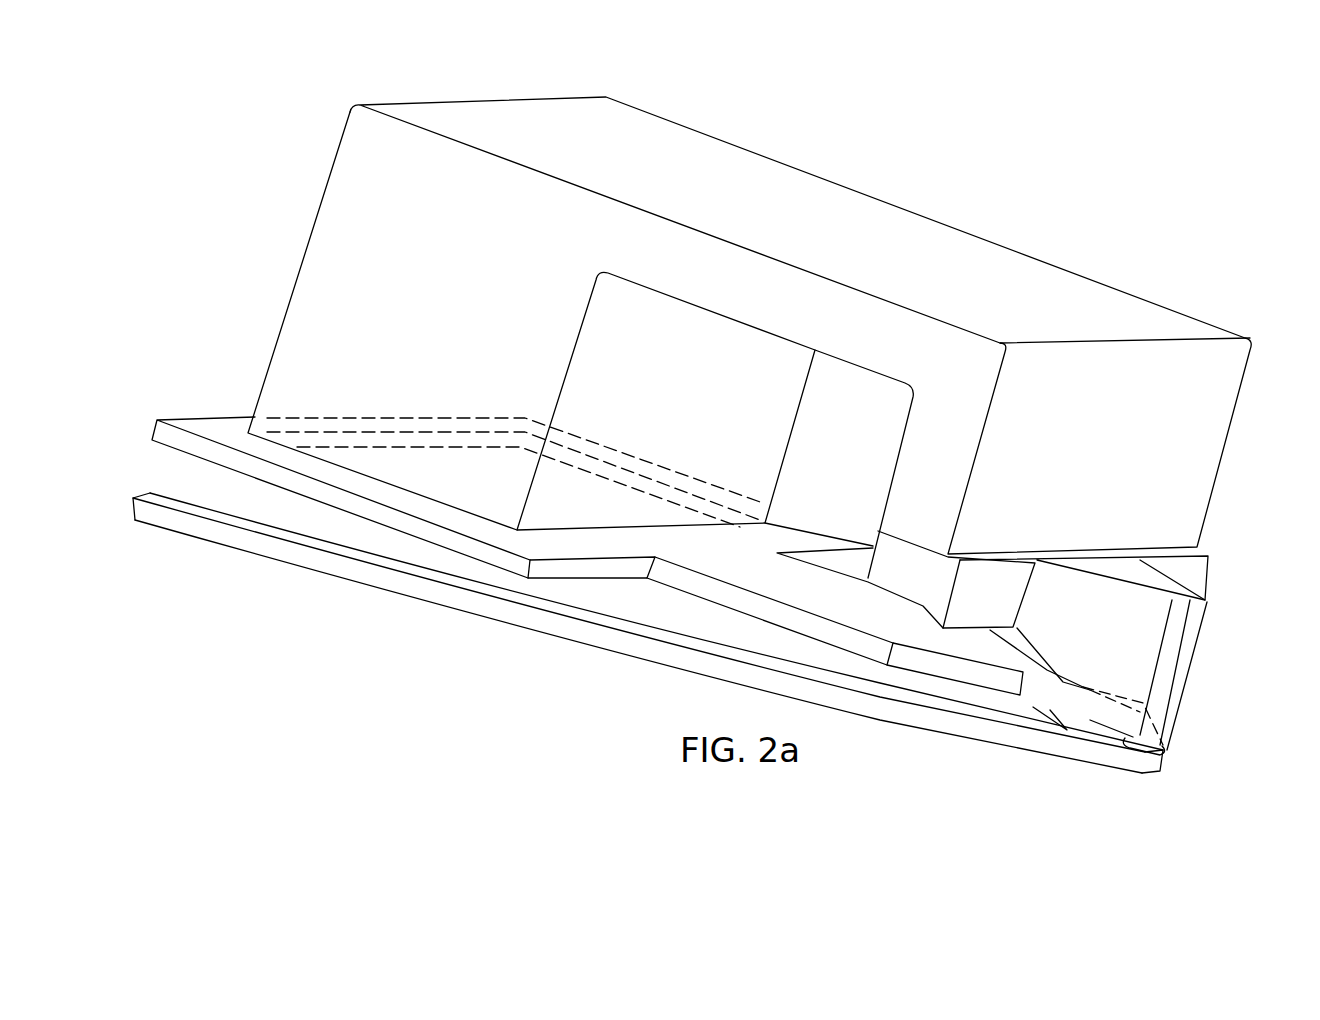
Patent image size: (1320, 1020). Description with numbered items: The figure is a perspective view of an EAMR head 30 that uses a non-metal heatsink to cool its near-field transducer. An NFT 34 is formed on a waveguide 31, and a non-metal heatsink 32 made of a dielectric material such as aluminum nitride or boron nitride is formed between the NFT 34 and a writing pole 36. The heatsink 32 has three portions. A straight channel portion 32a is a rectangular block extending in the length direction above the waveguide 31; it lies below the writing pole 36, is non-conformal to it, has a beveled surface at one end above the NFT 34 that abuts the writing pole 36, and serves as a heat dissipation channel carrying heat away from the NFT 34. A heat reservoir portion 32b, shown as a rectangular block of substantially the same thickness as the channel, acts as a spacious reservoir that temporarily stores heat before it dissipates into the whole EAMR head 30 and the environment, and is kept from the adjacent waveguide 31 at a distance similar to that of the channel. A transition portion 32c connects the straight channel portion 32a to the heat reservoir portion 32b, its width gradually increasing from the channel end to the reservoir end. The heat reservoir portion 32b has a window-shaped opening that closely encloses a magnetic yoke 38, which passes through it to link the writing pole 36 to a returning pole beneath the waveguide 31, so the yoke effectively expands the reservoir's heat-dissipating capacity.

The EAMR head 30 is at (1050, 202).
The waveguide 31 is at (402, 598).
The non-metal heatsink 32 is at (832, 528).
The straight channel portion 32a is at (1042, 708).
The heat reservoir portion 32b is at (205, 416).
The transition portion 32c is at (707, 602).
The NFT 34 is at (1160, 750).
The writing pole 36 is at (1212, 580).
The magnetic yoke 38 is at (700, 128).